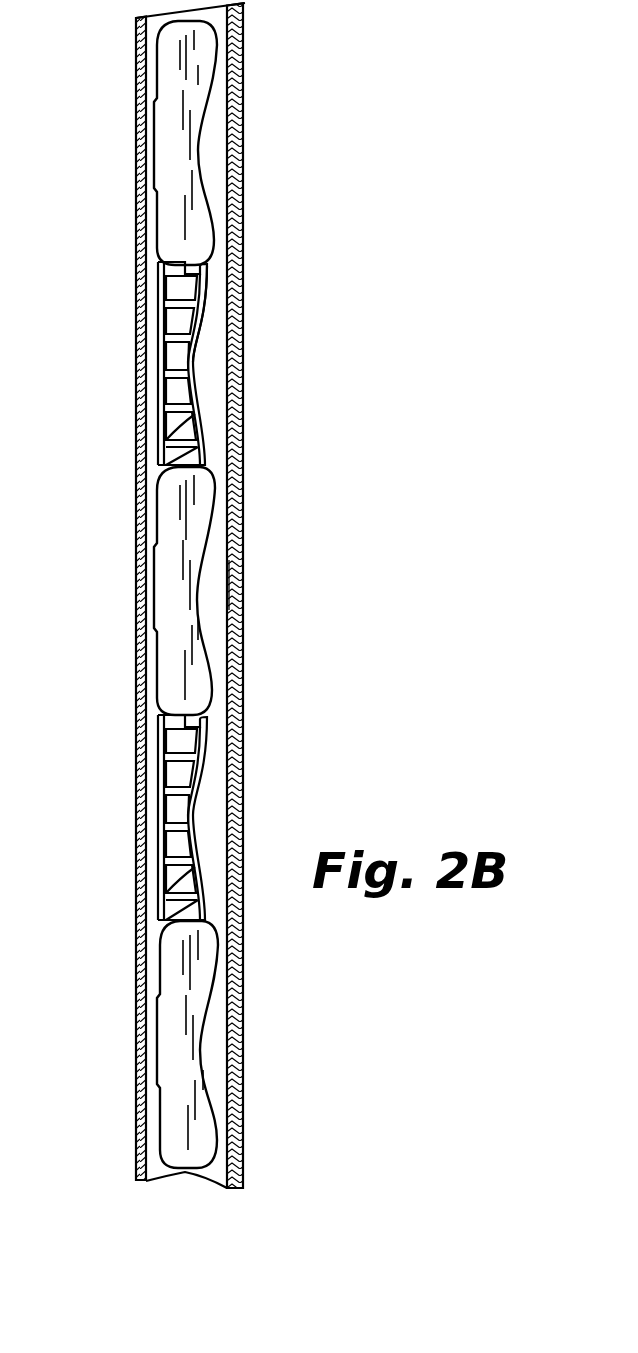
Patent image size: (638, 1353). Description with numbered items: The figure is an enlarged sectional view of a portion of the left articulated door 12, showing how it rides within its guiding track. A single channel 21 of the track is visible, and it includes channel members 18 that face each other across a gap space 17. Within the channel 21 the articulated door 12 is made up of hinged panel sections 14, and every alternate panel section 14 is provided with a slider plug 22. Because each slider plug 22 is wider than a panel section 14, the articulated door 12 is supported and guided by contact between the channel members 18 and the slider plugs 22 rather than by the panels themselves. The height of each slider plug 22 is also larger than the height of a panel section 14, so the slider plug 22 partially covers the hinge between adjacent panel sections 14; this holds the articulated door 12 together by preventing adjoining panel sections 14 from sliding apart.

The articulated door 12 is at (180, 1190).
The panel section 14 is at (206, 363).
The gap space 17 is at (210, 315).
The channel member 18 is at (141, 437).
The channel 21 is at (229, 585).
The slider plug 22 is at (165, 150).